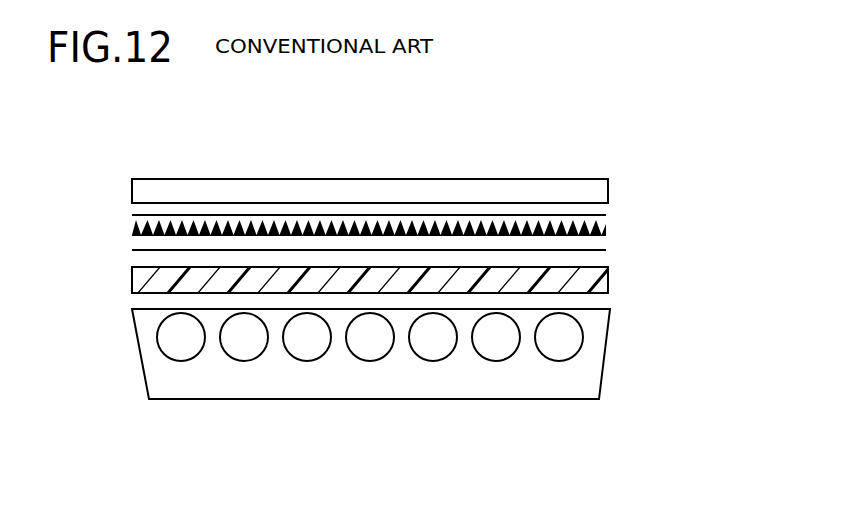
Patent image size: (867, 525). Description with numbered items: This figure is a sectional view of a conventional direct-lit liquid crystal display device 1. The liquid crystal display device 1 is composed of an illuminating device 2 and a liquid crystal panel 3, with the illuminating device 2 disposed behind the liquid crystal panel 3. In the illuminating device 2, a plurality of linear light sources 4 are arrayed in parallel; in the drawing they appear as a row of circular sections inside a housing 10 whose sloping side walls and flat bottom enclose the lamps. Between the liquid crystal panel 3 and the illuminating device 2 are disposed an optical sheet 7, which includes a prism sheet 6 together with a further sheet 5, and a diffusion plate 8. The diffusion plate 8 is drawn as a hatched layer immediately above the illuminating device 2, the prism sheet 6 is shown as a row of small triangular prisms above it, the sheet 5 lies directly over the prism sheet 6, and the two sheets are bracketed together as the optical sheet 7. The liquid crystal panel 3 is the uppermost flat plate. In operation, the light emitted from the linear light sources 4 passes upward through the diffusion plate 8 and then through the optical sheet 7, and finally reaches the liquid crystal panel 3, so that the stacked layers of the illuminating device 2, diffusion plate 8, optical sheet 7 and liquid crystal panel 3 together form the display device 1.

The liquid crystal display device 1 is at (444, 305).
The illuminating device 2 is at (443, 366).
The liquid crystal panel 3 is at (608, 190).
The linear light sources 4 is at (570, 337).
The diffusion sheet 5 is at (606, 216).
The prism sheet 6 is at (606, 235).
The optical sheet 7 is at (444, 211).
The diffusion plate 8 is at (608, 283).
The lamp housing / reflector 10 is at (602, 378).